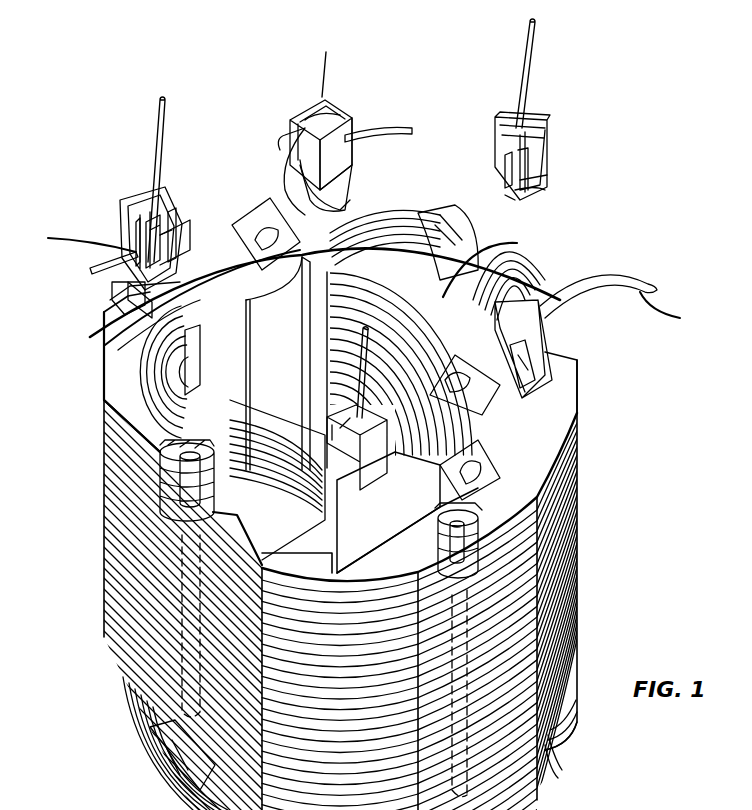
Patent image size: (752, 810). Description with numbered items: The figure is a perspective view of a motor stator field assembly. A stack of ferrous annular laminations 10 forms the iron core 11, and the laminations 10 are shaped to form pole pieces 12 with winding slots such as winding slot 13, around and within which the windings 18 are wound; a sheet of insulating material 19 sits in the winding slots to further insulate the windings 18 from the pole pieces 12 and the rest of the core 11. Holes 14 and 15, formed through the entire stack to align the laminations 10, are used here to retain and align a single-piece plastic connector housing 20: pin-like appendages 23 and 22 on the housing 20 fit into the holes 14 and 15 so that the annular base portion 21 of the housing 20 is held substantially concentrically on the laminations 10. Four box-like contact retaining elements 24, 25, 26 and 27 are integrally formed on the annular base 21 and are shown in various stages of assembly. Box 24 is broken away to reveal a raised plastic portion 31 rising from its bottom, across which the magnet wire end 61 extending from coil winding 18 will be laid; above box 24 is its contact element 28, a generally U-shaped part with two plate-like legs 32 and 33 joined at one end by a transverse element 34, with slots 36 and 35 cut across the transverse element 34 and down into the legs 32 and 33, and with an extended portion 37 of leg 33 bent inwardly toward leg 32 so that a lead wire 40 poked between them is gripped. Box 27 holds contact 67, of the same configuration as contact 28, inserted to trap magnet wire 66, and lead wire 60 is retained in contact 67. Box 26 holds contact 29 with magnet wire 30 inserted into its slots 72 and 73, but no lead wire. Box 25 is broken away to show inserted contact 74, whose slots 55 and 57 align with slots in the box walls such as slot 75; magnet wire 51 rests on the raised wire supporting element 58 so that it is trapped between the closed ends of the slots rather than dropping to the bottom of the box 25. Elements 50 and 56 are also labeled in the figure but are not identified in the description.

The annular laminations 10 is at (577, 583).
The iron core 11 is at (606, 497).
The pole pieces 12 is at (182, 362).
The winding slot 13 is at (140, 325).
The hole 14 is at (468, 676).
The hole 15 is at (190, 645).
The windings 18 is at (510, 290).
The sheet of insulating material 19 is at (420, 270).
The connector housing 20 is at (604, 406).
The annular base portion 21 is at (238, 515).
The pin-like appendage 22 is at (160, 492).
The pin-like appendage 23 is at (478, 528).
The box-like contact retaining element 24 is at (580, 328).
The box-like contact retaining element 25 is at (125, 232).
The box-like contact retaining element 26 is at (348, 150).
The box-like contact retaining element 27 is at (380, 474).
The contact element 28 is at (570, 123).
The contact 29 is at (321, 109).
The magnet wire 30 is at (410, 130).
The raised plastic portion 31 is at (535, 378).
The plate-like leg 32 is at (538, 165).
The plate-like leg 33 is at (500, 175).
The transverse element 34 is at (530, 192).
The slot 35 is at (507, 190).
The slot 36 is at (545, 185).
The extended portion 37 is at (540, 152).
The lead wire 40 is at (532, 48).
The terminal pin 50 is at (157, 118).
The magnet wire 51 is at (92, 266).
The slot 55 is at (135, 248).
The housing base 56 is at (125, 282).
The slot 57 is at (174, 212).
The raised element 58 is at (178, 245).
The lead wire 60 is at (286, 363).
The magnet wire end 61 is at (675, 311).
The magnet wire 66 is at (343, 505).
The contact 67 is at (336, 433).
The slot 72 is at (282, 150).
The slot 73 is at (338, 115).
The contact 74 is at (142, 225).
The slot 75 is at (74, 238).